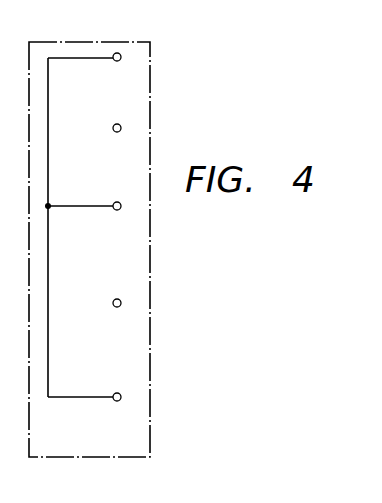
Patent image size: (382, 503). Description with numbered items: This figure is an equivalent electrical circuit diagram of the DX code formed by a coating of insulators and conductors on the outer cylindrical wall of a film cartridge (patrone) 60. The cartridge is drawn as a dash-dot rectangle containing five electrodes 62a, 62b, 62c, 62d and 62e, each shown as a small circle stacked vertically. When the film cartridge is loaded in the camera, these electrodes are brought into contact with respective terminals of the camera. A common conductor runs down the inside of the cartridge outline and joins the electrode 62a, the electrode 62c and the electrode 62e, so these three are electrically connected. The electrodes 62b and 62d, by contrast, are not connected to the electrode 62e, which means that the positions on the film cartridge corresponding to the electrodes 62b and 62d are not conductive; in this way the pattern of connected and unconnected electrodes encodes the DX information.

The film cartridge (patrone) 60 is at (150, 432).
The electrode 62a is at (113, 60).
The electrode 62b is at (113, 130).
The electrode 62c is at (113, 209).
The electrode 62d is at (113, 306).
The electrode 62e is at (114, 401).